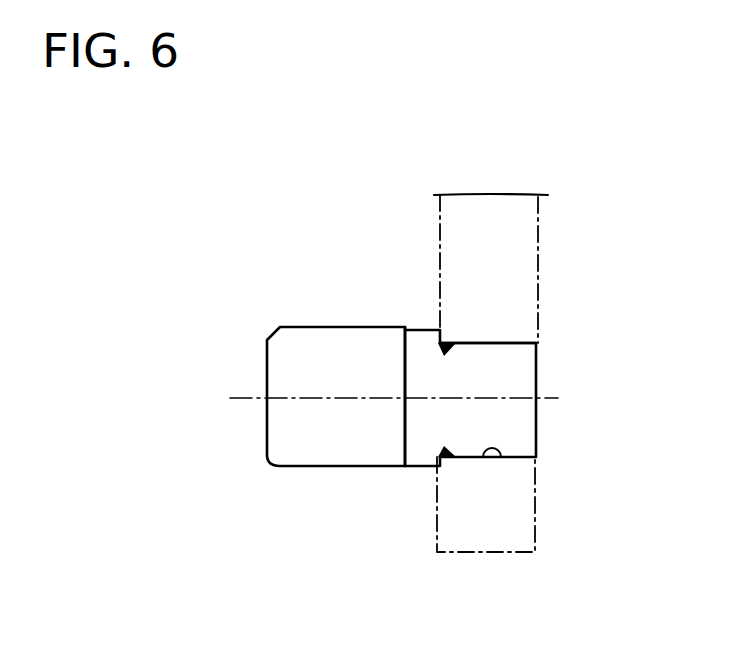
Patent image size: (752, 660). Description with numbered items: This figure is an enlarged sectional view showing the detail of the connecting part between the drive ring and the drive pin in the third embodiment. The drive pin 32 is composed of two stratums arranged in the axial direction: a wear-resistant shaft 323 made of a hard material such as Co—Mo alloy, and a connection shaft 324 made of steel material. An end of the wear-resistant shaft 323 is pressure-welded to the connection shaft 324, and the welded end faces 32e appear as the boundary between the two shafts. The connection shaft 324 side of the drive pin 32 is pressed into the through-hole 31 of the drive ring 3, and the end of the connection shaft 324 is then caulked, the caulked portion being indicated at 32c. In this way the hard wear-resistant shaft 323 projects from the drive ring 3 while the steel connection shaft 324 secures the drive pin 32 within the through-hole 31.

The drive ring 3 is at (503, 205).
The drive pin 32 is at (470, 412).
The wear-resistant shaft 323 is at (340, 445).
The connection shaft 324 is at (527, 427).
The caulked end 32c is at (540, 343).
The welded end faces 32e is at (403, 437).
The through-hole 31 is at (502, 457).